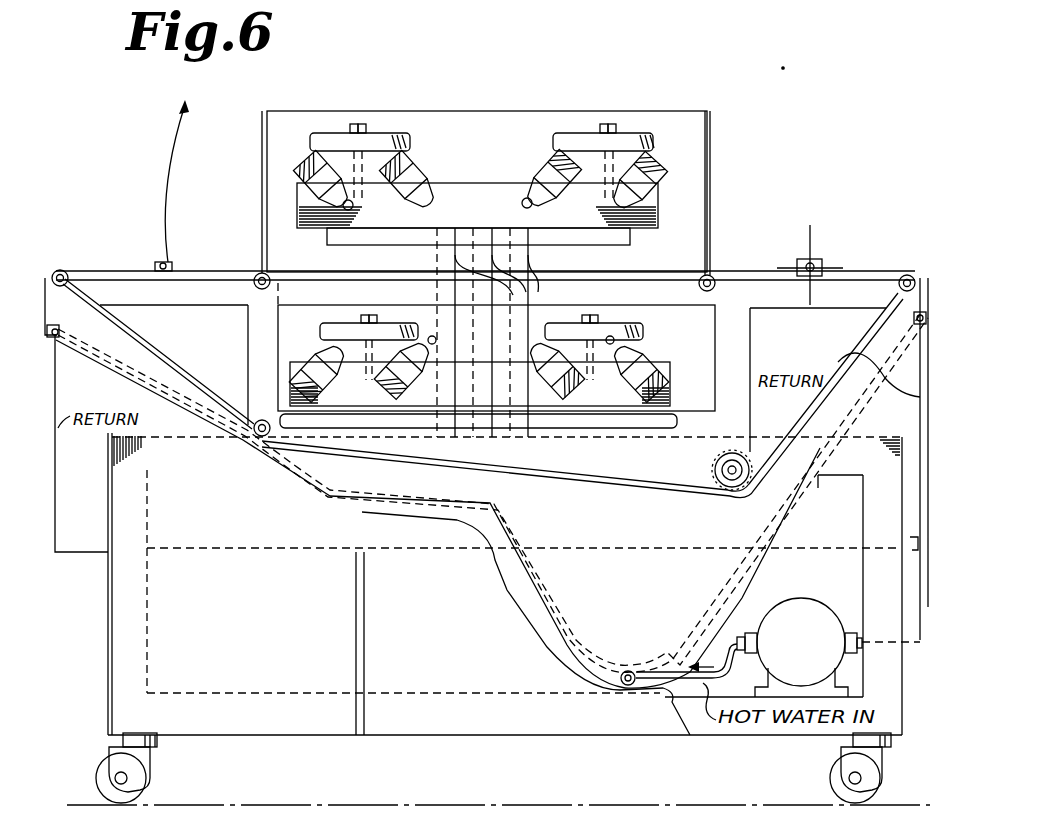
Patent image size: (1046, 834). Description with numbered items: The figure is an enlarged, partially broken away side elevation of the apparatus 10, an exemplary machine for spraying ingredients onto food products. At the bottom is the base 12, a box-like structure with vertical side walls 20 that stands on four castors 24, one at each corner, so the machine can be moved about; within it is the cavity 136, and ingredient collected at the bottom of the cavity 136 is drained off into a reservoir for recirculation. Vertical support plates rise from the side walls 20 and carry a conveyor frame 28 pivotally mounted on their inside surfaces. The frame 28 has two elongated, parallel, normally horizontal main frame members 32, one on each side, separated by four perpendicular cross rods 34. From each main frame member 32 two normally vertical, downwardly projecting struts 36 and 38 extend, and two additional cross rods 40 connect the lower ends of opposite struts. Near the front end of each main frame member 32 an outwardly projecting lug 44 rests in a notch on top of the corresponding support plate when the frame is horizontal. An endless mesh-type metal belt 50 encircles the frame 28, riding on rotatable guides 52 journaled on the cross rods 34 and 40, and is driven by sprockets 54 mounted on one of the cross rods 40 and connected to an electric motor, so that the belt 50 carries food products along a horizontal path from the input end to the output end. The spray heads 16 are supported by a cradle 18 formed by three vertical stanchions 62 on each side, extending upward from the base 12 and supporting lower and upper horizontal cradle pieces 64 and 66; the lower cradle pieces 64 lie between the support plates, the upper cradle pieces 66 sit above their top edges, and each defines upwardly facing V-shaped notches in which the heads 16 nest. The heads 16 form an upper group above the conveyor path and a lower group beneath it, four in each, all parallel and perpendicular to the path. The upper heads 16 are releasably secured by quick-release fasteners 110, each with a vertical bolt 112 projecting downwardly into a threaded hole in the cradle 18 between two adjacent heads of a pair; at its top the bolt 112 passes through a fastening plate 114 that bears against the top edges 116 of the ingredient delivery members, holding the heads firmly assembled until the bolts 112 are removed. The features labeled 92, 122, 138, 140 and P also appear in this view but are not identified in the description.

The apparatus 10 is at (432, 792).
The base 12 is at (108, 655).
The spray heads 16 is at (293, 172).
The cradle 18 is at (487, 152).
The side walls 20 is at (523, 602).
The castors 24 is at (150, 780).
The conveyor frame 28 is at (241, 306).
The main frame members 32 is at (145, 300).
The cross rods 34 is at (62, 268).
The strut 36 is at (258, 384).
The strut 38 is at (740, 350).
The cross rods 40 is at (260, 437).
The lug 44 is at (172, 265).
The belt 50 is at (178, 366).
The rotatable guides 52 is at (72, 288).
The sprockets 54 is at (697, 485).
The stanchions 62 is at (515, 297).
The lower cradle pieces 64 is at (667, 385).
The upper cradle pieces 66 is at (608, 227).
The nozzle rollers 92 is at (353, 208).
The quick-release fasteners 110 is at (330, 121).
The vertical bolt 112 is at (371, 133).
The fastening plate 114 is at (400, 133).
The top edges 116 is at (317, 157).
The lower nozzle pivot 122 is at (350, 348).
The cavity 136 is at (633, 640).
The right tank wall 138 is at (757, 568).
The left tank wall 140 is at (525, 597).
The pivot P is at (813, 262).